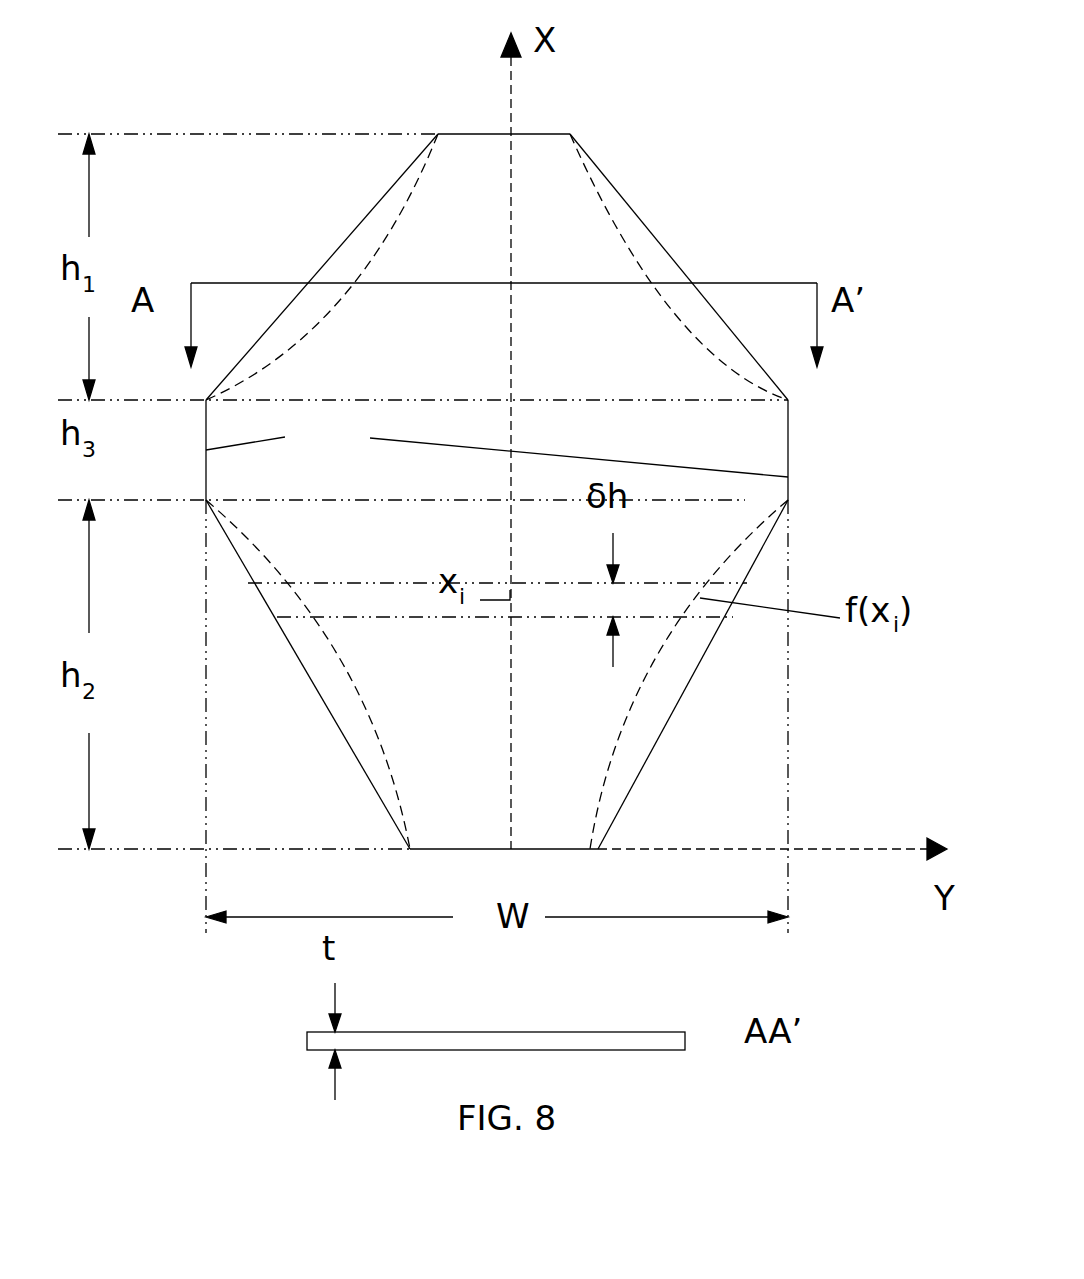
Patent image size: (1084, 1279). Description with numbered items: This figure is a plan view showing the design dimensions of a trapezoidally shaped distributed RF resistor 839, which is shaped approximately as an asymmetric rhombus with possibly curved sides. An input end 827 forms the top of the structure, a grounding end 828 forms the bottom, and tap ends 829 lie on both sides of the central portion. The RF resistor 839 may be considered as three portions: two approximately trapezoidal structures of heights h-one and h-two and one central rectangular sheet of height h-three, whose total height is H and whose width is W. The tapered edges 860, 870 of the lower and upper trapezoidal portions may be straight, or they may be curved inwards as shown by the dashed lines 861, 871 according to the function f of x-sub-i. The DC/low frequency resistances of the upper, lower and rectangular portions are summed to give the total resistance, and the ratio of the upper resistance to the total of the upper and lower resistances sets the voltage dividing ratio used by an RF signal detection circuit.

The input end 827 is at (485, 134).
The grounding end 828 is at (548, 850).
The tap ends 829 is at (497, 447).
The RF resistor 839 is at (460, 376).
The tapered edge 860 is at (705, 675).
The dashed line 861 is at (640, 706).
The tapered edge 870 is at (640, 208).
The dashed line 871 is at (663, 303).